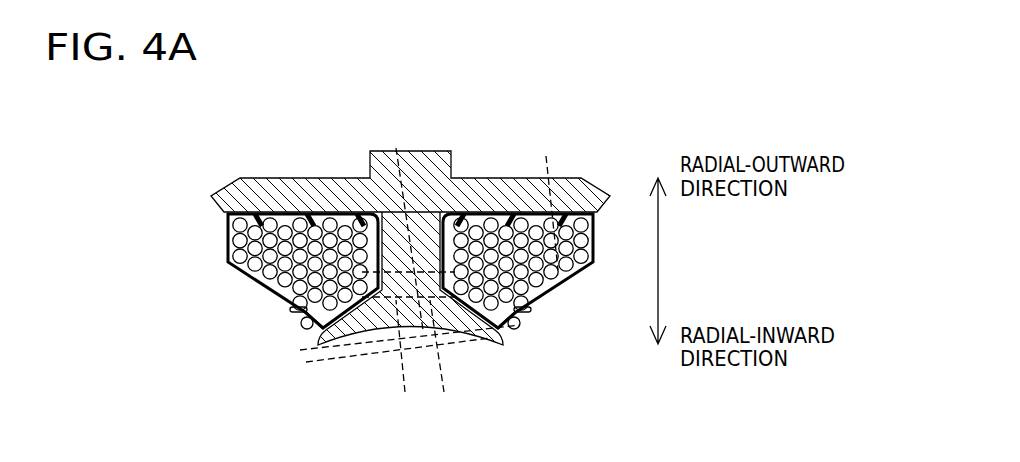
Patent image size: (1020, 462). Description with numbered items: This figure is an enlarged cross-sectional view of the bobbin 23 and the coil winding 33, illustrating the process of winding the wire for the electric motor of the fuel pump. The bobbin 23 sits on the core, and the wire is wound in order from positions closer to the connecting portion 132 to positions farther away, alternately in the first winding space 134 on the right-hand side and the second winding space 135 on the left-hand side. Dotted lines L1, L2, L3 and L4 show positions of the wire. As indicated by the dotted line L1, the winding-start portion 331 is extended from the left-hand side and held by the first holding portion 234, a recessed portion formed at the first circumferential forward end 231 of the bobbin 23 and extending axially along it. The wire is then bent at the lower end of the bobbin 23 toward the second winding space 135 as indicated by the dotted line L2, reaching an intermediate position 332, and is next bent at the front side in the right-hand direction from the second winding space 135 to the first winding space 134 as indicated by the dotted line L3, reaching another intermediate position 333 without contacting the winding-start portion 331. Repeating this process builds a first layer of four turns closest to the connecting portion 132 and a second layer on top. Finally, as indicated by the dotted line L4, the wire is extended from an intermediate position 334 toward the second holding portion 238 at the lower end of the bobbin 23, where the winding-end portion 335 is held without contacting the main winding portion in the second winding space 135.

The bobbin 23 is at (278, 208).
The coil winding 33 is at (316, 214).
The second winding space 135 is at (343, 220).
The connecting portion 132 is at (428, 240).
The intermediate position 333 is at (468, 218).
The intermediate position 334 is at (572, 216).
The first winding space 134 is at (508, 217).
The second holding portion 238 is at (307, 322).
The winding-end portion 335 is at (312, 330).
The intermediate position 332 is at (363, 300).
The first circumferential forward end 231 is at (490, 338).
The winding-start portion 331 is at (512, 330).
The first holding portion 234 is at (527, 313).
The dotted line L1 is at (410, 358).
The dotted line L2 is at (398, 344).
The dotted line L3 is at (404, 223).
The dotted line L4 is at (545, 200).